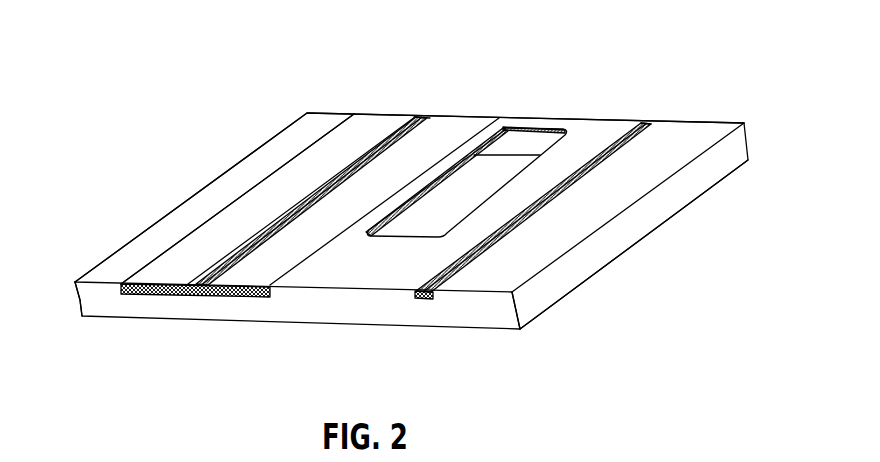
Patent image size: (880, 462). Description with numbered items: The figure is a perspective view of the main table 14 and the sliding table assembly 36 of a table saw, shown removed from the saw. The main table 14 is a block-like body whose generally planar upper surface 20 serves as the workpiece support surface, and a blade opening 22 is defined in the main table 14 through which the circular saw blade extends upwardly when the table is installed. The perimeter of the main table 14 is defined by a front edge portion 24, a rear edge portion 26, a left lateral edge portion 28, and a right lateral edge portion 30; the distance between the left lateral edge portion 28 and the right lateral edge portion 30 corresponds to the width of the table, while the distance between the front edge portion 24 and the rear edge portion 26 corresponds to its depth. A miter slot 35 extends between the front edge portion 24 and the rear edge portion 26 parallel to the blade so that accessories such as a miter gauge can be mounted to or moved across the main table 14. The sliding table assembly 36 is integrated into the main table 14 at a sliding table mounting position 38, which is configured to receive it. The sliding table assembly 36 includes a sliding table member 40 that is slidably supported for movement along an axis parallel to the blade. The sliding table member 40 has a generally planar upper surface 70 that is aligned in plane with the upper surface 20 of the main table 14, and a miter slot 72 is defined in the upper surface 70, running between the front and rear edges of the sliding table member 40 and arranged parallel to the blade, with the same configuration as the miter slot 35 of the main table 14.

The main table 14 is at (181, 105).
The upper surface 20 is at (697, 138).
The blade opening 22 is at (488, 163).
The front edge portion 24 is at (295, 307).
The rear edge portion 26 is at (583, 120).
The left lateral edge portion 28 is at (80, 302).
The right lateral edge portion 30 is at (593, 247).
The miter slot 35 is at (647, 123).
The sliding table assembly 36 is at (377, 104).
The sliding table mounting position 38 is at (216, 241).
The sliding table member 40 is at (283, 192).
The upper surface 70 is at (243, 218).
The miter slot 72 is at (417, 117).